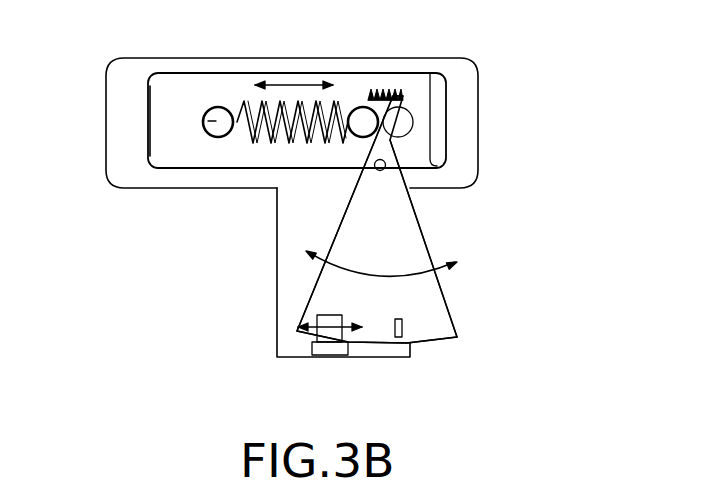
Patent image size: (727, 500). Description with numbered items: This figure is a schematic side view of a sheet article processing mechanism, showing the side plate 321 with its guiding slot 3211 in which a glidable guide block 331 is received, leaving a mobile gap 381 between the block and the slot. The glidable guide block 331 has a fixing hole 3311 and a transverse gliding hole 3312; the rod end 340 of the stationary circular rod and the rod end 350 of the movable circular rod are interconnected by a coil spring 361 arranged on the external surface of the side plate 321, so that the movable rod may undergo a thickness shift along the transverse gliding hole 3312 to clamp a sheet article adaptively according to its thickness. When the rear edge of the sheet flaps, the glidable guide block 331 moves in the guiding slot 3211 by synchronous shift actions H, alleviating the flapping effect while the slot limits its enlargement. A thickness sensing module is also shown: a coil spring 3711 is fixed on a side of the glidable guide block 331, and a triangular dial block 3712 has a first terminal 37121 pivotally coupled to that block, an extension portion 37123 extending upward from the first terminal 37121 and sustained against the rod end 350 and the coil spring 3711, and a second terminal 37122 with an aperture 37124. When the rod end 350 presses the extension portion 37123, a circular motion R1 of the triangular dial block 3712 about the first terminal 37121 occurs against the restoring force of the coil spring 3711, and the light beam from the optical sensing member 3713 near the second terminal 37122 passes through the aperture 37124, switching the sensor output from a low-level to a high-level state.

The side plate 321 is at (476, 128).
The guiding slot 3211 is at (388, 166).
The glidable guide block 331 is at (420, 98).
The fixing hole 3311 is at (218, 140).
The transverse gliding hole 3312 is at (361, 144).
The rod end 340 is at (213, 121).
The rod end 350 is at (377, 95).
The coil spring 361 is at (247, 110).
The mobile gap 381 is at (440, 124).
The coil spring 3711 is at (376, 92).
The triangular dial block 3712 is at (430, 323).
The first terminal 37121 is at (394, 140).
The second terminal 37122 is at (383, 337).
The extension portion 37123 is at (395, 108).
The aperture 37124 is at (408, 332).
The optical sensing member 3713 is at (318, 345).
The synchronous shift actions H is at (282, 84).
The circular motion R1 is at (350, 273).